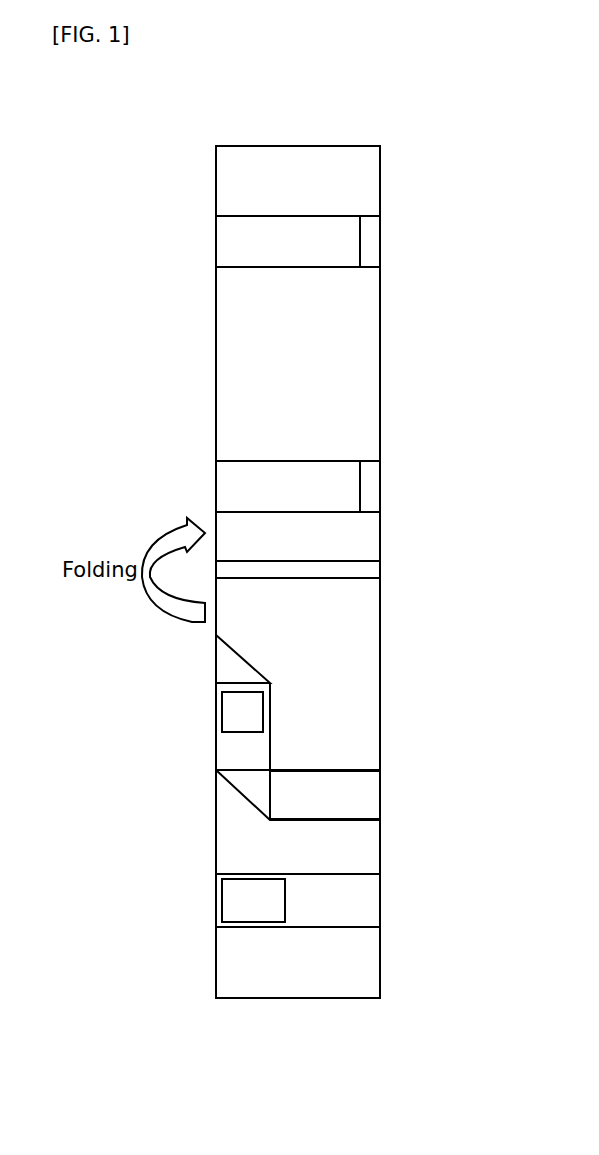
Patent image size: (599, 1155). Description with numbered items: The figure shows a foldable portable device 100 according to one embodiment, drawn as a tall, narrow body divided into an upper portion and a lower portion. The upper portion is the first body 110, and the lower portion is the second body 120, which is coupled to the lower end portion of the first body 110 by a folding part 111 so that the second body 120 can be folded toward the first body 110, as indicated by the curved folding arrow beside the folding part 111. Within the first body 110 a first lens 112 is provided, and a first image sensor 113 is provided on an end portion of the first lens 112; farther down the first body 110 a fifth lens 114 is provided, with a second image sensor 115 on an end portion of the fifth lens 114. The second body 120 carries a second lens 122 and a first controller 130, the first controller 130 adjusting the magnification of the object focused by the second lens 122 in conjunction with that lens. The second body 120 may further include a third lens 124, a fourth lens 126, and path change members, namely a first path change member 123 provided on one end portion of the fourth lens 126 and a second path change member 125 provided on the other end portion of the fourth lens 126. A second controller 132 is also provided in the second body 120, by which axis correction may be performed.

The foldable portable device 100 is at (114, 177).
The first body 110 is at (383, 294).
The folding part 111 is at (373, 571).
The first lens 112 is at (218, 238).
The first image sensor 113 is at (373, 237).
The fifth lens 114 is at (218, 485).
The second image sensor 115 is at (373, 484).
The second body 120 is at (385, 677).
The second lens 122 is at (232, 897).
The first path change member 123 is at (228, 665).
The third lens 124 is at (373, 797).
The second path change member 125 is at (257, 794).
The fourth lens 126 is at (228, 708).
The first controller 130 is at (373, 900).
The second controller 132 is at (228, 752).